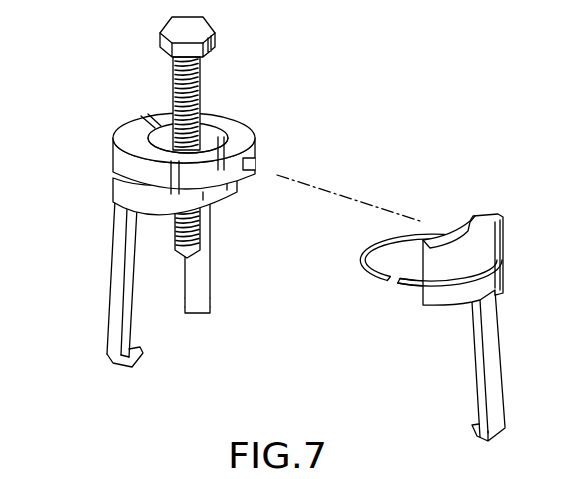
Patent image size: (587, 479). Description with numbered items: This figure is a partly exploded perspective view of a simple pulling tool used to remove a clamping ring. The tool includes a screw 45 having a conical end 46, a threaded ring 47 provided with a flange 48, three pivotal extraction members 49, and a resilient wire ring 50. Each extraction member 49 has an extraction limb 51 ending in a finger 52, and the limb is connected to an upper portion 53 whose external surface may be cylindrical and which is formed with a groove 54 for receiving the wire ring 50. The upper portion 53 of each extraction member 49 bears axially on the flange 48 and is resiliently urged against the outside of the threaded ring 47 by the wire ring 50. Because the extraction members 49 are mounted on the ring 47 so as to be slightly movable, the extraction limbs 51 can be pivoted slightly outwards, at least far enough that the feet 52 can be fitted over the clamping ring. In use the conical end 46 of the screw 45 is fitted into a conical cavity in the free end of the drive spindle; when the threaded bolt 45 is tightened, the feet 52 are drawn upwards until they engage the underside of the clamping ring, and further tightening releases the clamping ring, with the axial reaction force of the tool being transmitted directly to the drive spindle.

The screw 45 is at (200, 72).
The conical end 46 is at (180, 253).
The threaded ring 47 is at (228, 152).
The flange 48 is at (223, 207).
The extraction members 49 is at (105, 209).
The resilient wire ring 50 is at (437, 230).
The extraction limb 51 is at (118, 275).
The finger 52 is at (133, 360).
The upper portion 53 is at (471, 259).
The groove 54 is at (256, 162).